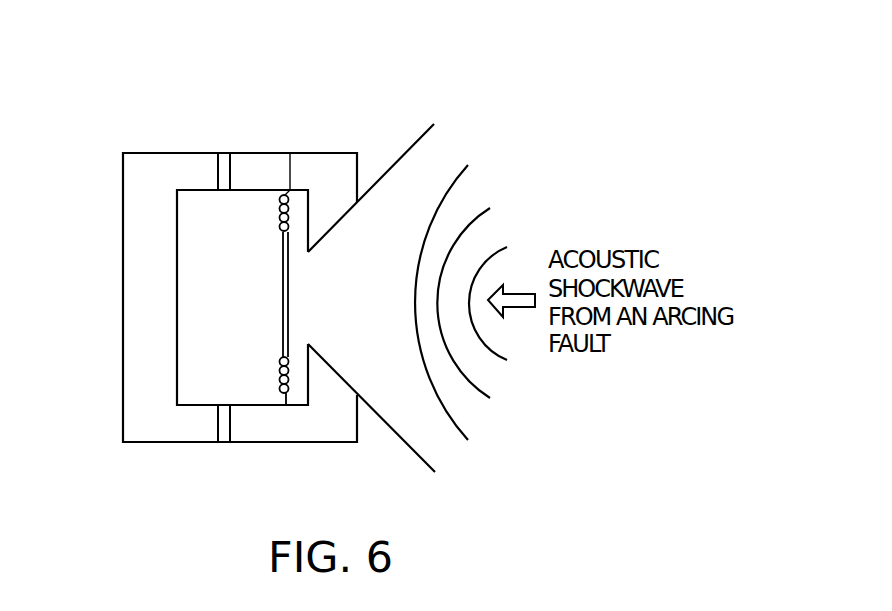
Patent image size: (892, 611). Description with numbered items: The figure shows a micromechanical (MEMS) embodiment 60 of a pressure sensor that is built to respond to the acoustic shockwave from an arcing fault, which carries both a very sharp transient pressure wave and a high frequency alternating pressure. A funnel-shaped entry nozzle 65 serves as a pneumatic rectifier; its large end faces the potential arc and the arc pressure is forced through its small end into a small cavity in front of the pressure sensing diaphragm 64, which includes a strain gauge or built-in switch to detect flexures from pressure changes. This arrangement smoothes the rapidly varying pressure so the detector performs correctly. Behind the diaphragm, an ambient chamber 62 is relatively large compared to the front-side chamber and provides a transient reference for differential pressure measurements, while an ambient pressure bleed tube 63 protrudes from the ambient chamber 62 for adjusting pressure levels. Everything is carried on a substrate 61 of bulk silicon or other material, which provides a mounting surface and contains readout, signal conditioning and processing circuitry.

The micromechanical (MEMS) embodiment 60 is at (131, 487).
The substrate 61 is at (172, 428).
The ambient chamber 62 is at (203, 265).
The ambient pressure bleed tube 63 is at (222, 152).
The pressure sensing diaphragm 64 is at (290, 153).
The funnel-shaped entry nozzle 65 is at (411, 447).